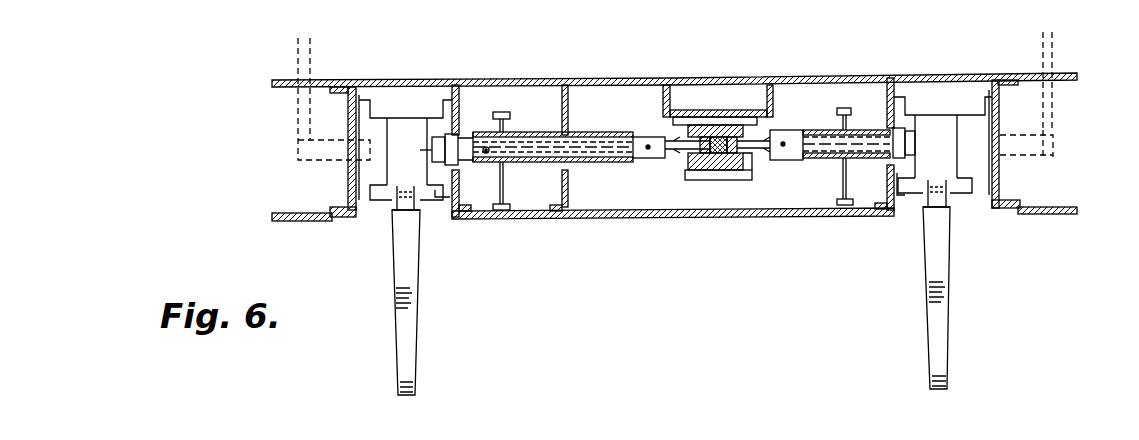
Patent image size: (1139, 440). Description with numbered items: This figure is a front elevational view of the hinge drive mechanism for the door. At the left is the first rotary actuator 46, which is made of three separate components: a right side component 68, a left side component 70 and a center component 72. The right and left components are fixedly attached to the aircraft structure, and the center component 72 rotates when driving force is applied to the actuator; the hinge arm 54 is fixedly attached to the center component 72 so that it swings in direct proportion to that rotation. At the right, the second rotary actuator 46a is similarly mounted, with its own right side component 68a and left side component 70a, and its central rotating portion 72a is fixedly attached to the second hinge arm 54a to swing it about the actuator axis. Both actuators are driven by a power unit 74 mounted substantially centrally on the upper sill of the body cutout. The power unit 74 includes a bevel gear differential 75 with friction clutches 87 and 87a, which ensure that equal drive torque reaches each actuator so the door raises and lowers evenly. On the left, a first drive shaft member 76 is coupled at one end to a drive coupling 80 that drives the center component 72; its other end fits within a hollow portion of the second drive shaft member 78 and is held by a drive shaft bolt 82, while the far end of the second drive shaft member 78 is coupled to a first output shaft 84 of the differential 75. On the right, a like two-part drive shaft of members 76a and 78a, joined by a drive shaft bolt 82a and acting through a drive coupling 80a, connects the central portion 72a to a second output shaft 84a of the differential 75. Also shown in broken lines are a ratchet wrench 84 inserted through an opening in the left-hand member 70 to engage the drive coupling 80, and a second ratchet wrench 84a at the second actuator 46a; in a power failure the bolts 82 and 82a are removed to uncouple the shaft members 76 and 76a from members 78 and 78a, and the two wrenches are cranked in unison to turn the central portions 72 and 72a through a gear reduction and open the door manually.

The first rotary actuator 46 is at (426, 104).
The second rotary actuator 46a is at (951, 110).
The hinge arm 54 is at (413, 317).
The second hinge arm 54a is at (942, 316).
The right side component 68 is at (427, 190).
The right side component 68a is at (908, 170).
The left side component 70 is at (373, 200).
The left side component 70a is at (973, 170).
The center component 72 is at (405, 138).
The central rotating portion 72a is at (933, 127).
The power unit 74 is at (737, 128).
The bevel gear differential 75 is at (717, 155).
The first drive shaft member 76 is at (472, 132).
The drive shaft member 76a is at (878, 142).
The second drive shaft member 78 is at (583, 140).
The drive shaft member 78a is at (790, 160).
The drive coupling 80 is at (437, 153).
The drive coupling 80a is at (913, 148).
The drive shaft bolt 82 is at (508, 188).
The drive shaft bolt 82a is at (845, 207).
The ratchet wrench 84 is at (311, 40).
The second ratchet wrench 84a is at (1057, 46).
The friction clutch 87 is at (685, 163).
The friction clutch 87a is at (737, 162).